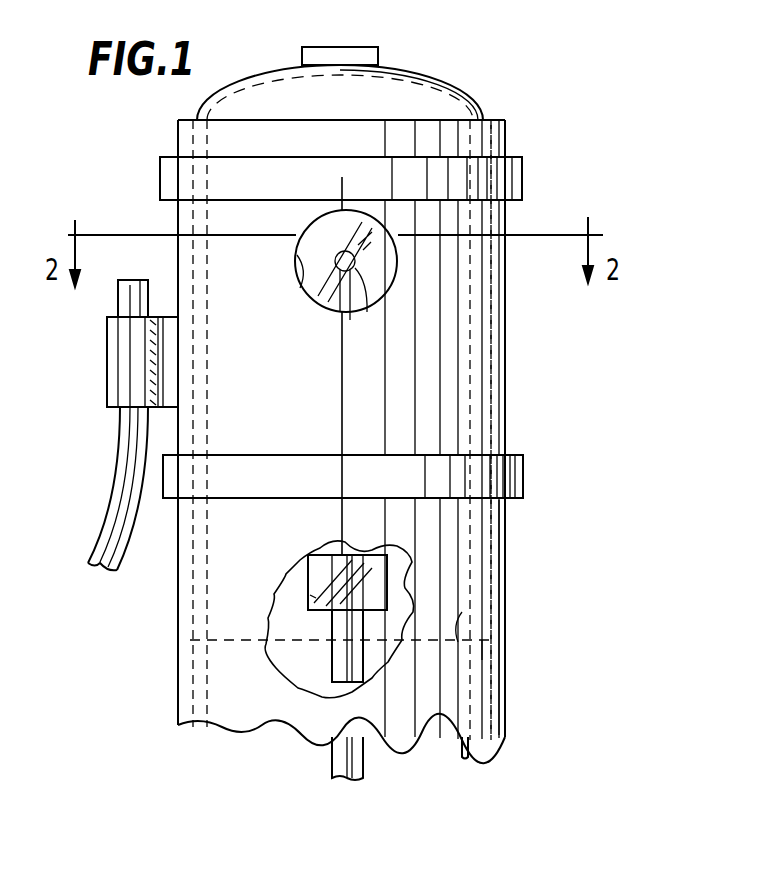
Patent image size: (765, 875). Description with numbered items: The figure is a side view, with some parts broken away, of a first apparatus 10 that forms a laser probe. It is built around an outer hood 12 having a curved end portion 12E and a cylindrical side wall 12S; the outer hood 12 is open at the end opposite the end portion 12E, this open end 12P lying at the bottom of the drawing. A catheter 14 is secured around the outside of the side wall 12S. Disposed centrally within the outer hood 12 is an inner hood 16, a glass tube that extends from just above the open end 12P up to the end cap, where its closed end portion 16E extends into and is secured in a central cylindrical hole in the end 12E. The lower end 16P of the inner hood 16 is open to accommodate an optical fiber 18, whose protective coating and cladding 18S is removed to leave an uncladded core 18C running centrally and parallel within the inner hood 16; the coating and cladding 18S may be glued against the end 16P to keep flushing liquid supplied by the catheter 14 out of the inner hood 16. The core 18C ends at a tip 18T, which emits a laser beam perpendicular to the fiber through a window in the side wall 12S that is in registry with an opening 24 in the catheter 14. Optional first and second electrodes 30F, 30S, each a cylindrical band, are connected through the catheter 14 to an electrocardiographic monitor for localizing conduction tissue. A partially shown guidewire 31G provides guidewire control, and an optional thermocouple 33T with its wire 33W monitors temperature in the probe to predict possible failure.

The first apparatus 10 is at (643, 389).
The outer hood 12 is at (465, 108).
The end portion of outer hood 12E is at (420, 80).
The cylindrical side wall of outer hood 12S is at (493, 347).
The open end of outer hood 12P is at (440, 645).
The catheter 14 is at (507, 546).
The inner hood 16 is at (387, 590).
The end portion of inner hood 16E is at (343, 47).
The open end of inner hood 16P is at (310, 595).
The optical fiber 18 is at (365, 757).
The tip 18T is at (360, 301).
The protective coating and cladding 18S is at (330, 650).
The uncladded core 18C is at (320, 557).
The opening in catheter 24 is at (306, 288).
The second electrode 30S is at (522, 172).
The first electrode 30F is at (523, 476).
The guidewire 31G is at (120, 440).
The thermocouple 33T is at (468, 628).
The wire 33W is at (482, 742).